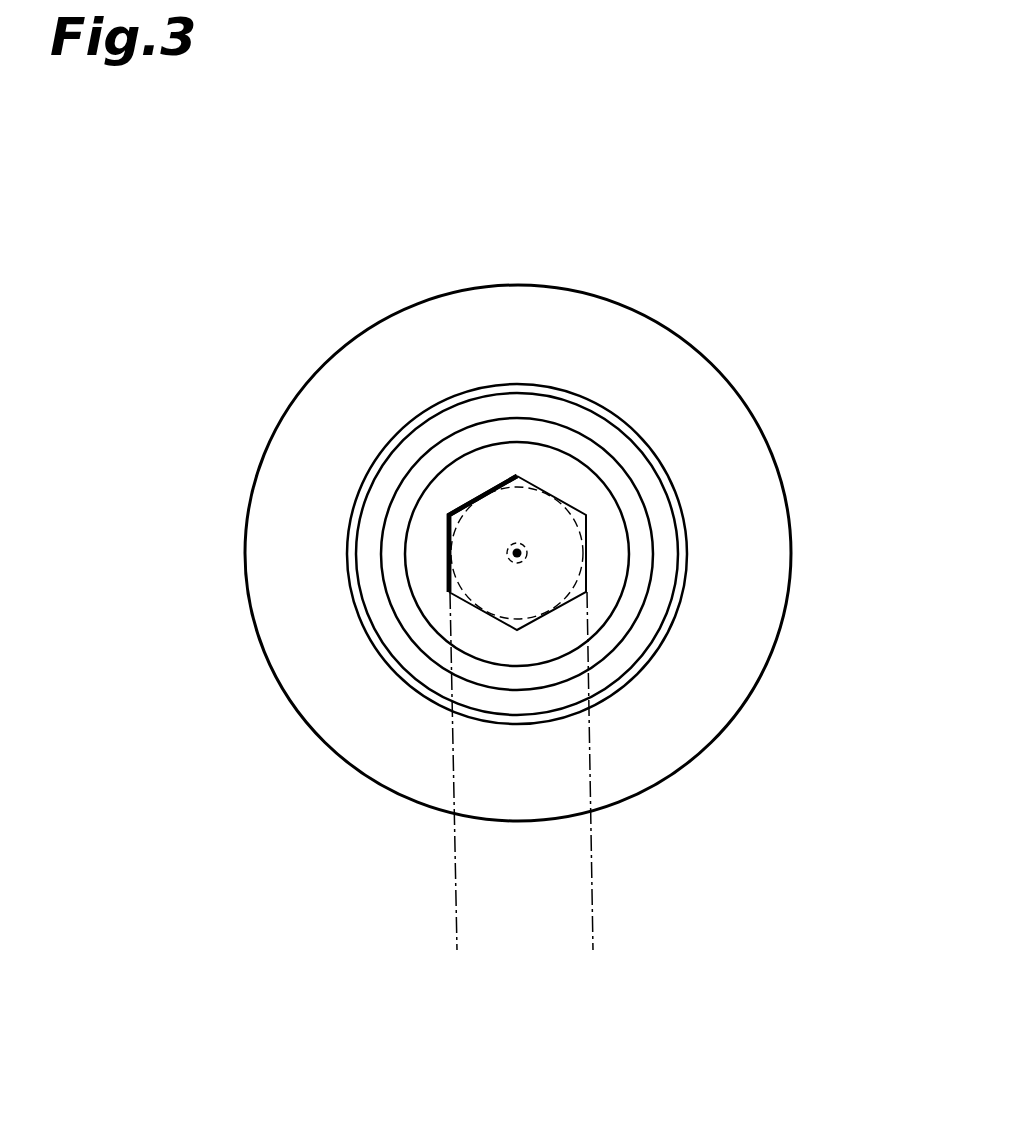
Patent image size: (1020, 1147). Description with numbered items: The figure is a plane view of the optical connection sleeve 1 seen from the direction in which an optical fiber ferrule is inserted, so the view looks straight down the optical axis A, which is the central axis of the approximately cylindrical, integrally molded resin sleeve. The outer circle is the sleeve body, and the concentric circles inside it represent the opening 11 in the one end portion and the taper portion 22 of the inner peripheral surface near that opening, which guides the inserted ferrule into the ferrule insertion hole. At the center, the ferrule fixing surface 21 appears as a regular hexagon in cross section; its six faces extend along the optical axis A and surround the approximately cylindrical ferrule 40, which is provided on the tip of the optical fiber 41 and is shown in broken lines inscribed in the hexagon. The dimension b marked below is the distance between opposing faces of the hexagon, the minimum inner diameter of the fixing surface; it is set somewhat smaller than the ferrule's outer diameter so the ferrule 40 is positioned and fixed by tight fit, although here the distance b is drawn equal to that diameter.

The optical connection sleeve 1 is at (672, 314).
The opening 11 is at (620, 606).
The ferrule fixing surface 21 is at (586, 522).
The taper portion 22 is at (572, 478).
The ferrule 40 is at (447, 525).
The optical fiber 41 is at (516, 544).
The optical axis A is at (507, 551).
The distance between opposing faces b is at (592, 928).